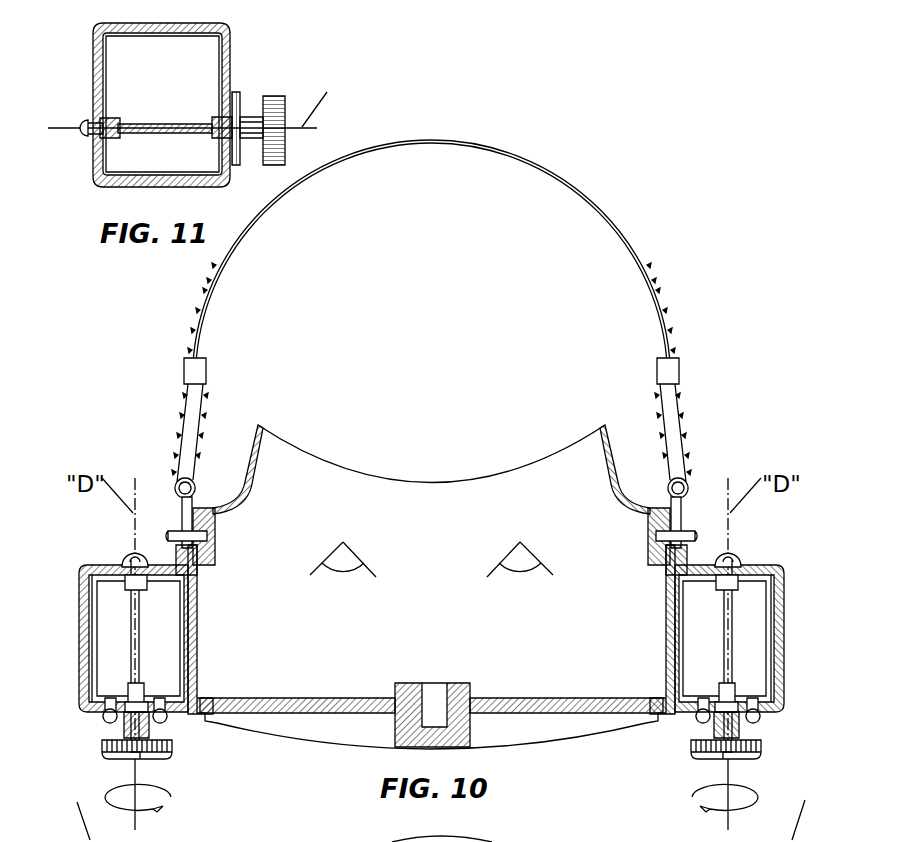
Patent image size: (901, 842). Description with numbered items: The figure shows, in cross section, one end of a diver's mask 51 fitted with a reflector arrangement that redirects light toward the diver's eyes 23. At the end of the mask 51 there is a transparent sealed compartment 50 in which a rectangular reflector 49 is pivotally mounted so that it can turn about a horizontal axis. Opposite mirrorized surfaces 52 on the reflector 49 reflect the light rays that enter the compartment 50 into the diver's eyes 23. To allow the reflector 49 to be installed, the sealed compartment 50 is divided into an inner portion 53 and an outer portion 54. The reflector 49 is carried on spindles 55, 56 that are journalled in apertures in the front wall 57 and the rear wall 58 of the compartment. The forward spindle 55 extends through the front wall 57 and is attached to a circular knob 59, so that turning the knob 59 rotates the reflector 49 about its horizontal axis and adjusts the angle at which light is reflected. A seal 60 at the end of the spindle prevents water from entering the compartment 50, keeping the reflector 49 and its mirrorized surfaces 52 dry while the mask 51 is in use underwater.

In FIG. 10, the diver's eyes 23 is at (343, 577).
In FIG. 11, the rectangular reflector 49 is at (167, 133).
In FIG. 11, the transparent sealed compartment 50 is at (93, 92).
In FIG. 10, the mask 51 is at (533, 738).
In FIG. 11, the mirrorized surface 52 is at (152, 125).
In FIG. 10, the inner portion 53 is at (197, 615).
In FIG. 10, the outer portion 54 is at (80, 620).
In FIG. 10, the forward spindle 55 is at (137, 683).
In FIG. 10, the spindle 56 is at (135, 587).
In FIG. 11, the front wall 57 is at (222, 48).
In FIG. 10, the front wall 57 is at (92, 707).
In FIG. 11, the rear wall 58 is at (95, 158).
In FIG. 10, the rear wall 58 is at (108, 567).
In FIG. 11, the circular knob 59 is at (273, 95).
In FIG. 10, the circular knob 59 is at (102, 757).
In FIG. 10, the seal 60 is at (168, 717).